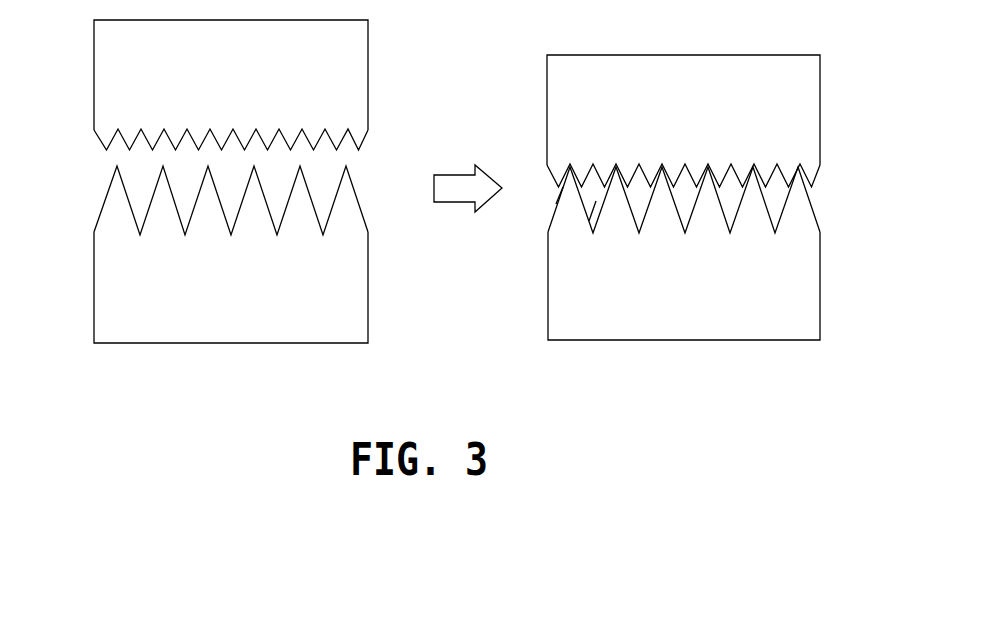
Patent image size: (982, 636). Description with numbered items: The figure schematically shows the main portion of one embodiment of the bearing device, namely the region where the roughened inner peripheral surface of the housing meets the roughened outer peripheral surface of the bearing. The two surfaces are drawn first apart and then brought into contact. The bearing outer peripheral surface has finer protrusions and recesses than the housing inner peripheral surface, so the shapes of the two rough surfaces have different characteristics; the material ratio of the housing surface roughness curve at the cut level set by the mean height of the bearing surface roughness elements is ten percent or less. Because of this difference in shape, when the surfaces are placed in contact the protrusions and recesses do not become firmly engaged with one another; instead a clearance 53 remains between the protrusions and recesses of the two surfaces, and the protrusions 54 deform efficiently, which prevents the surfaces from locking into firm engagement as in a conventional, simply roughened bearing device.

The clearance 53 is at (593, 201).
The protrusions 54 is at (560, 192).